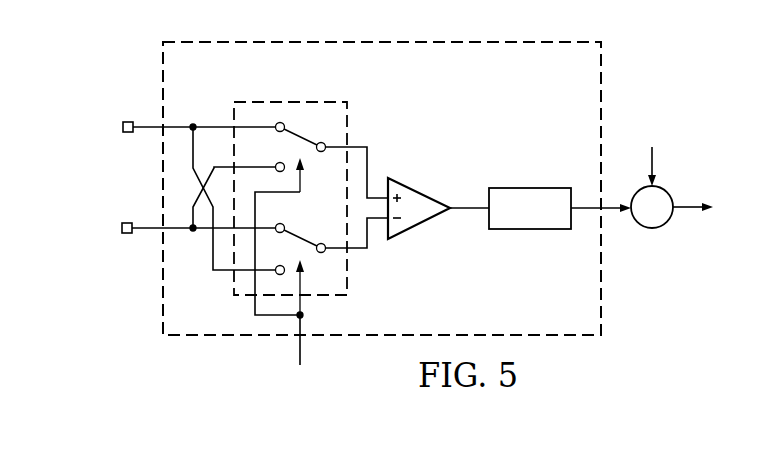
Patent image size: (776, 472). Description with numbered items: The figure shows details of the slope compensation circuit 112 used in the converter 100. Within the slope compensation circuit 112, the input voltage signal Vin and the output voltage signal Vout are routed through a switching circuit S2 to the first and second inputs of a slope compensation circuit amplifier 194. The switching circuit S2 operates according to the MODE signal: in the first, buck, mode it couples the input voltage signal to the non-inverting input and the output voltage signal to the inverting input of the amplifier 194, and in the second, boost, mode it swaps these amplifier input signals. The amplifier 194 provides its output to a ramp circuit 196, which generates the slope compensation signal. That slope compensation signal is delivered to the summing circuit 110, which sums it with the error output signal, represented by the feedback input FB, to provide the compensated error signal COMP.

The switching regulator control circuit 100 is at (696, 76).
The slope compensation circuit 112 is at (493, 130).
The slope compensation circuit amplifier 194 is at (420, 223).
The ramp circuit 196 is at (530, 229).
The summing circuit 110 is at (666, 222).
The switching circuit S2 is at (285, 95).